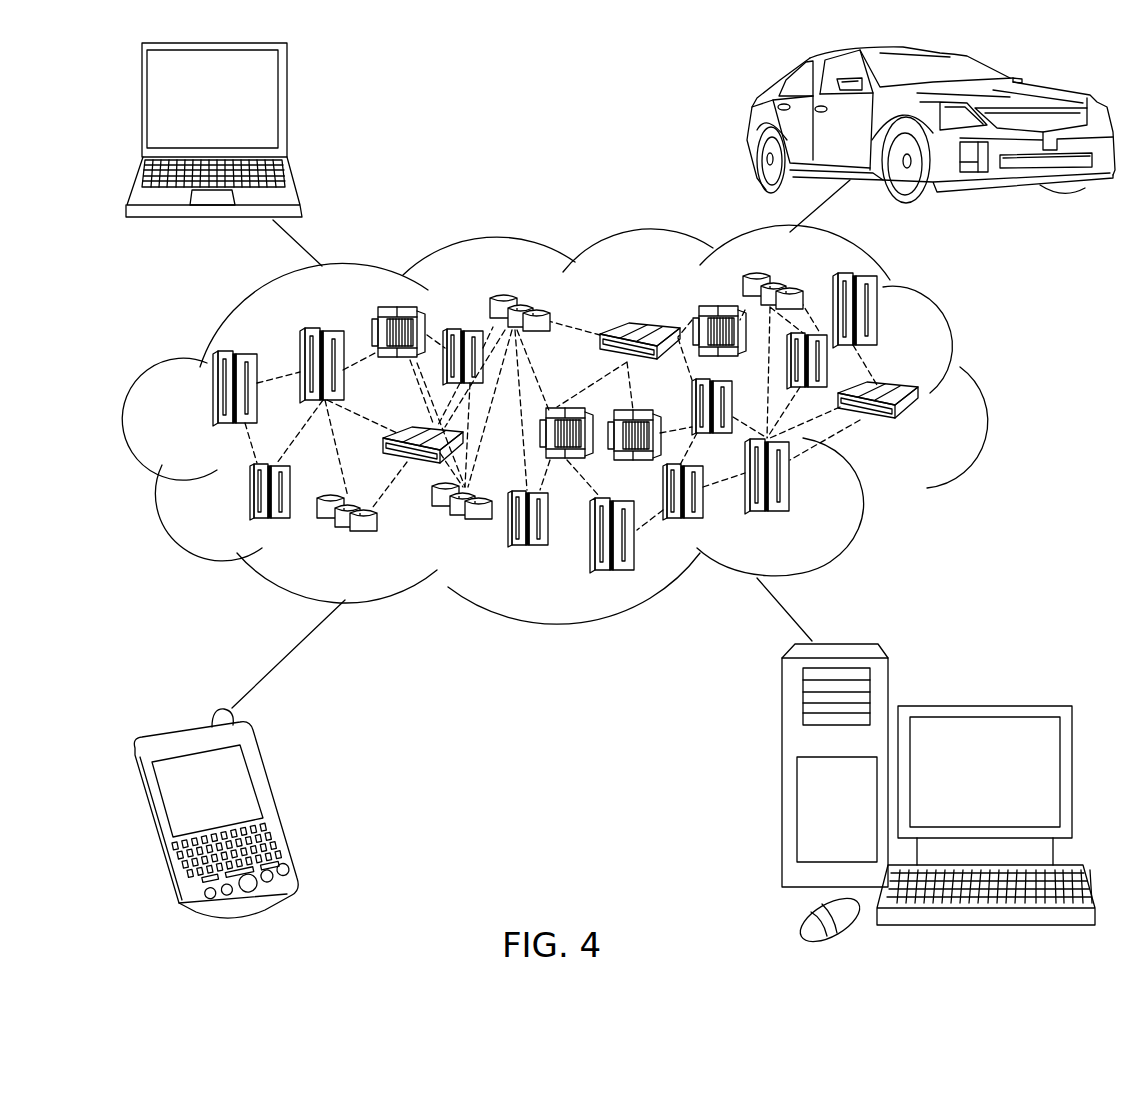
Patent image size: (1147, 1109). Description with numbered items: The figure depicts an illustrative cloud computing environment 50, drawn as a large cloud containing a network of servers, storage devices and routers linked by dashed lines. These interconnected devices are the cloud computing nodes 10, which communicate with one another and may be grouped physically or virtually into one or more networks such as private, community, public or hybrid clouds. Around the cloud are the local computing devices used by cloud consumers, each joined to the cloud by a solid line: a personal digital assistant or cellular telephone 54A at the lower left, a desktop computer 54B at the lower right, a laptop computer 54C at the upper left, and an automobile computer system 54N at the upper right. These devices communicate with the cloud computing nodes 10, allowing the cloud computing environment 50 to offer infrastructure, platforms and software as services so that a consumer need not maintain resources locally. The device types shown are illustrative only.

The cloud computing environment 50 is at (987, 393).
The cloud computing nodes 10 is at (920, 431).
The personal digital assistant or cellular telephone 54A is at (275, 802).
The desktop computer 54B is at (982, 706).
The laptop computer 54C is at (287, 108).
The automobile computer system 54N is at (752, 122).